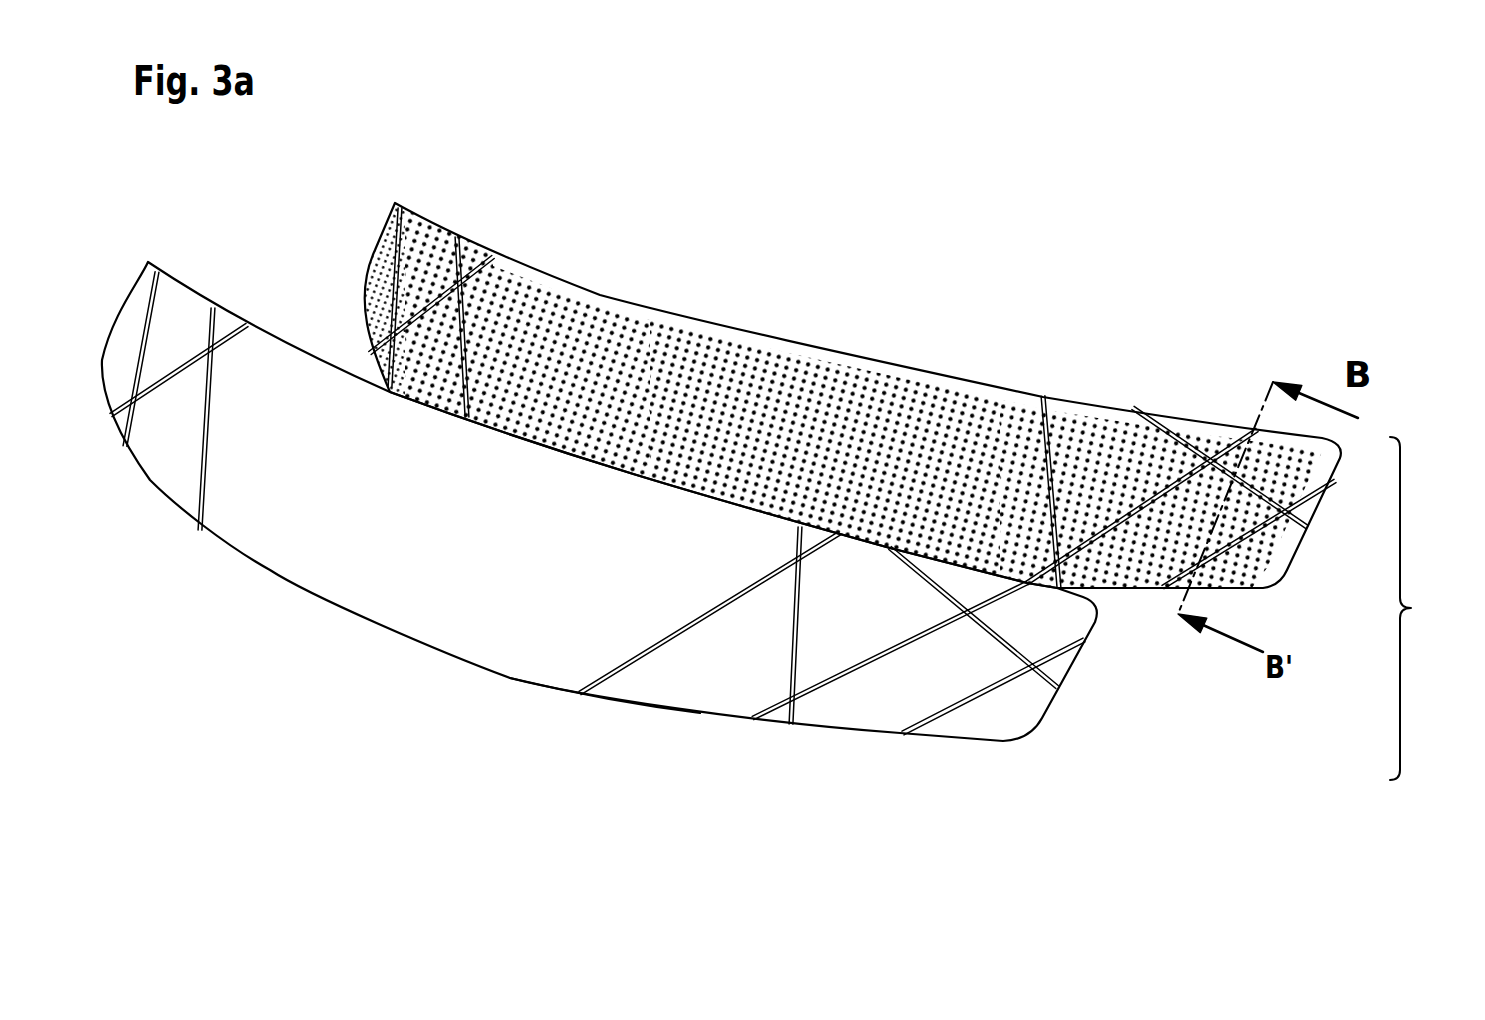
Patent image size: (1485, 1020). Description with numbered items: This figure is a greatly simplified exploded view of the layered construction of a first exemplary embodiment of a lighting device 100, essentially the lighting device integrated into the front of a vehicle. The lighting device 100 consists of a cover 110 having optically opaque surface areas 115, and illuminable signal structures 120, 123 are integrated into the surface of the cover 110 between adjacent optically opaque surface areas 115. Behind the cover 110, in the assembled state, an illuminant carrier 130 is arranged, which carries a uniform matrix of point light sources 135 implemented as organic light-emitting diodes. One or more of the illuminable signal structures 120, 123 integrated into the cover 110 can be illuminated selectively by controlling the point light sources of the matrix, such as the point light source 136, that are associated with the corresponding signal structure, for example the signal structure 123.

The lighting device 100 is at (1431, 608).
The cover 110 is at (392, 578).
The optically opaque surface areas 115 is at (250, 478).
The illuminable signal structure 120 is at (213, 352).
The illuminable signal structure 123 is at (618, 663).
The illuminant carrier 130 is at (800, 347).
The point light sources 135 is at (636, 345).
The point light source 136 is at (1060, 417).